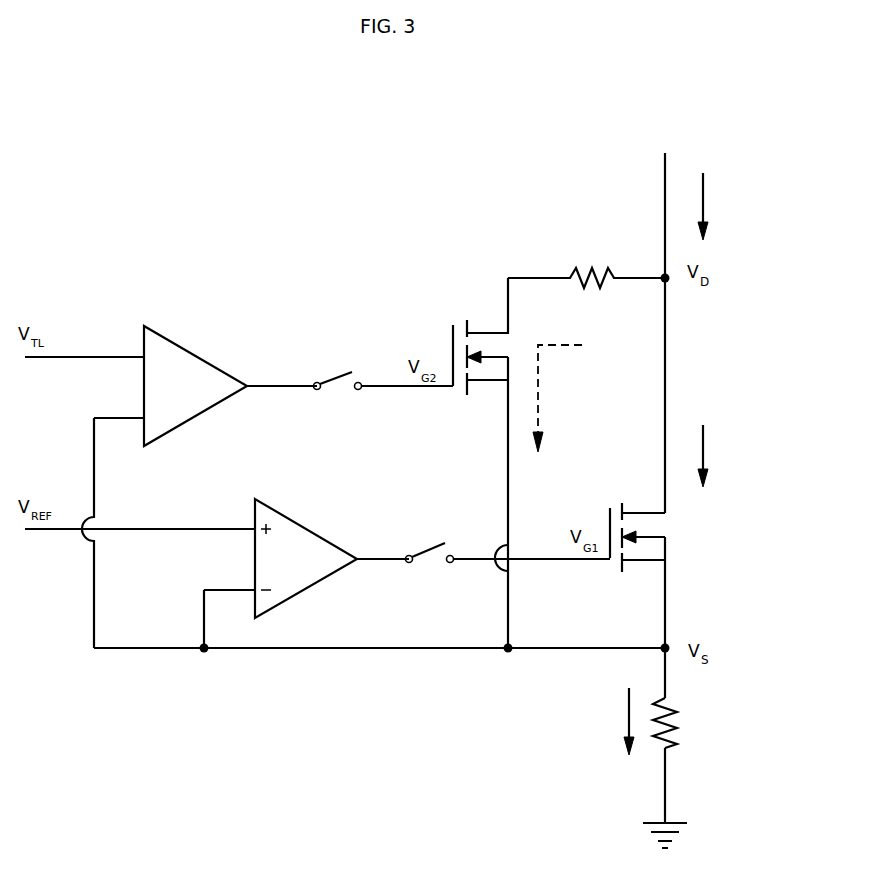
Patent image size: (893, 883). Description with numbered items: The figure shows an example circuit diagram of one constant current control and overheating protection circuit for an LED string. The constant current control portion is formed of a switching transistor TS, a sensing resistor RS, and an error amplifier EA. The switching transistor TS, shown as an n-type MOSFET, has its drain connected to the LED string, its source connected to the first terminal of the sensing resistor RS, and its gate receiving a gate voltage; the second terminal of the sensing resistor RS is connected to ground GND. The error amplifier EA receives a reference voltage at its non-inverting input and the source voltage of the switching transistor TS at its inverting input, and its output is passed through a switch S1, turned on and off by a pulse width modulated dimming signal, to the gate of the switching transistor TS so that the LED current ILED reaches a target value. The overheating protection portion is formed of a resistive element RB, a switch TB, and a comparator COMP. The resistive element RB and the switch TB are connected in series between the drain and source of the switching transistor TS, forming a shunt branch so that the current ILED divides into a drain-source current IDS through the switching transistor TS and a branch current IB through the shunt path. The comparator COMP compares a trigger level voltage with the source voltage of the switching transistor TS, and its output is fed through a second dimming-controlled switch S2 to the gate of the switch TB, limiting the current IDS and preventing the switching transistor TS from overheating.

The comparator COMP is at (190, 350).
The error amplifier EA is at (298, 525).
The switch TB is at (443, 340).
The switching transistor TS is at (675, 522).
The switch S1 is at (508, 555).
The switch S2 is at (384, 382).
The resistive element RB is at (586, 257).
The sensing resistor RS is at (682, 723).
The current flowing through the LED string ILED is at (663, 464).
The current flowing between the drain and the source of the switching transistor IDS is at (718, 456).
The current flowing into the current branch path IB is at (557, 398).
The ground GND is at (665, 835).